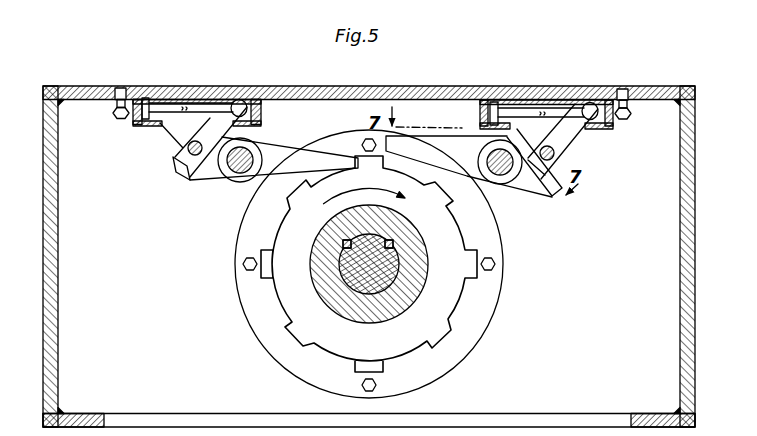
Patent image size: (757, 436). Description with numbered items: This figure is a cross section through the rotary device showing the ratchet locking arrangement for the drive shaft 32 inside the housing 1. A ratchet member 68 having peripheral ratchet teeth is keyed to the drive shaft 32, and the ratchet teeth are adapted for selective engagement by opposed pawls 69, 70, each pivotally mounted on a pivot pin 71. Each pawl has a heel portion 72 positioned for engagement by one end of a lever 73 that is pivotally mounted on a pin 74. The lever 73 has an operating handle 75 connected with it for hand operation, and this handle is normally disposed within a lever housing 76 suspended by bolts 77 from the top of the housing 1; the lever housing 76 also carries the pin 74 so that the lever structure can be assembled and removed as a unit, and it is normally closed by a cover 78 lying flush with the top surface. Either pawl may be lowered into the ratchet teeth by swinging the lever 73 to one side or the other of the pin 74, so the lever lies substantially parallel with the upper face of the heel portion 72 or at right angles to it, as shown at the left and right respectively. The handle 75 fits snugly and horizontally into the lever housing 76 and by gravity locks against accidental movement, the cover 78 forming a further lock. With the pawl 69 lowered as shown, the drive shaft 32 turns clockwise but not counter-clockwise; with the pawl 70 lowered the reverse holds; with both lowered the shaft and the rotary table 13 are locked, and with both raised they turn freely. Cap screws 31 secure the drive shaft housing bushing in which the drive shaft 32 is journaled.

The housing 1 is at (44, 196).
The rotary table 13 is at (676, 84).
The cap screws 31 is at (506, 265).
The drive shaft 32 is at (388, 278).
The ratchet member 68 is at (292, 236).
The pawl 69 is at (307, 152).
The pawl 70 is at (445, 140).
The pivot pin 71 is at (243, 168).
The heel portion 72 is at (570, 200).
The lever 73 is at (213, 123).
The pin 74 is at (188, 147).
The operating handle 75 is at (173, 103).
The lever housing 76 is at (157, 122).
The bolts 77 is at (119, 88).
The cover 78 is at (231, 103).